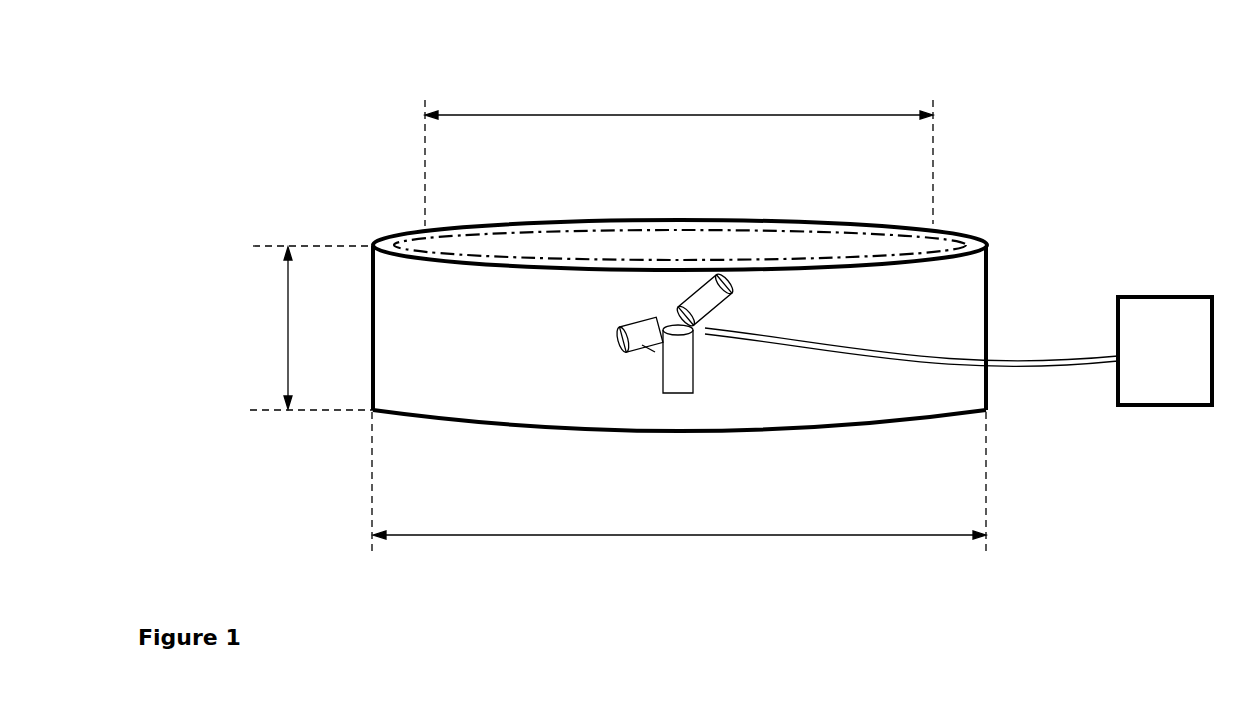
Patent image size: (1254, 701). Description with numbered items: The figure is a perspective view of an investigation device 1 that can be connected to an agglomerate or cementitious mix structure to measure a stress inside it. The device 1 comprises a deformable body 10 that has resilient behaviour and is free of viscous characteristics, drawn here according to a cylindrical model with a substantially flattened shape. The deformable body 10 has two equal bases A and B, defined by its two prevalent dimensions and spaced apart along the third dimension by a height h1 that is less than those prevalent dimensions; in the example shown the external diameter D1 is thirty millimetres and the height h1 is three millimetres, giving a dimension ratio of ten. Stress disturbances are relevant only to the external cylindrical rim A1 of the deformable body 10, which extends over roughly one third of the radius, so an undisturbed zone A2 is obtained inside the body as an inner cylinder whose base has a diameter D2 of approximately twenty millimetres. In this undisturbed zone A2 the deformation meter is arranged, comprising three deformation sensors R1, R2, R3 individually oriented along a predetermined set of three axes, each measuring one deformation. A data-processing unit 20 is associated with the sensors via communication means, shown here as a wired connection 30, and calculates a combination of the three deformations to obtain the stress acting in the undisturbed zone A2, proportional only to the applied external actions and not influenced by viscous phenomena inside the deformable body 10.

The investigation device 1 is at (204, 89).
The deformable body 10 is at (1012, 282).
The data-processing unit 20 is at (1173, 308).
The cable 30 is at (1030, 372).
The base A is at (397, 230).
The external cylindrical rim A1 is at (960, 245).
The undisturbed zone A2 is at (718, 220).
The base B is at (420, 428).
The external diameter D1 is at (679, 548).
The diameter D2 is at (679, 105).
The height h1 is at (273, 328).
The deformation sensor R1 is at (655, 398).
The deformation sensor R2 is at (620, 338).
The deformation sensor R3 is at (738, 285).